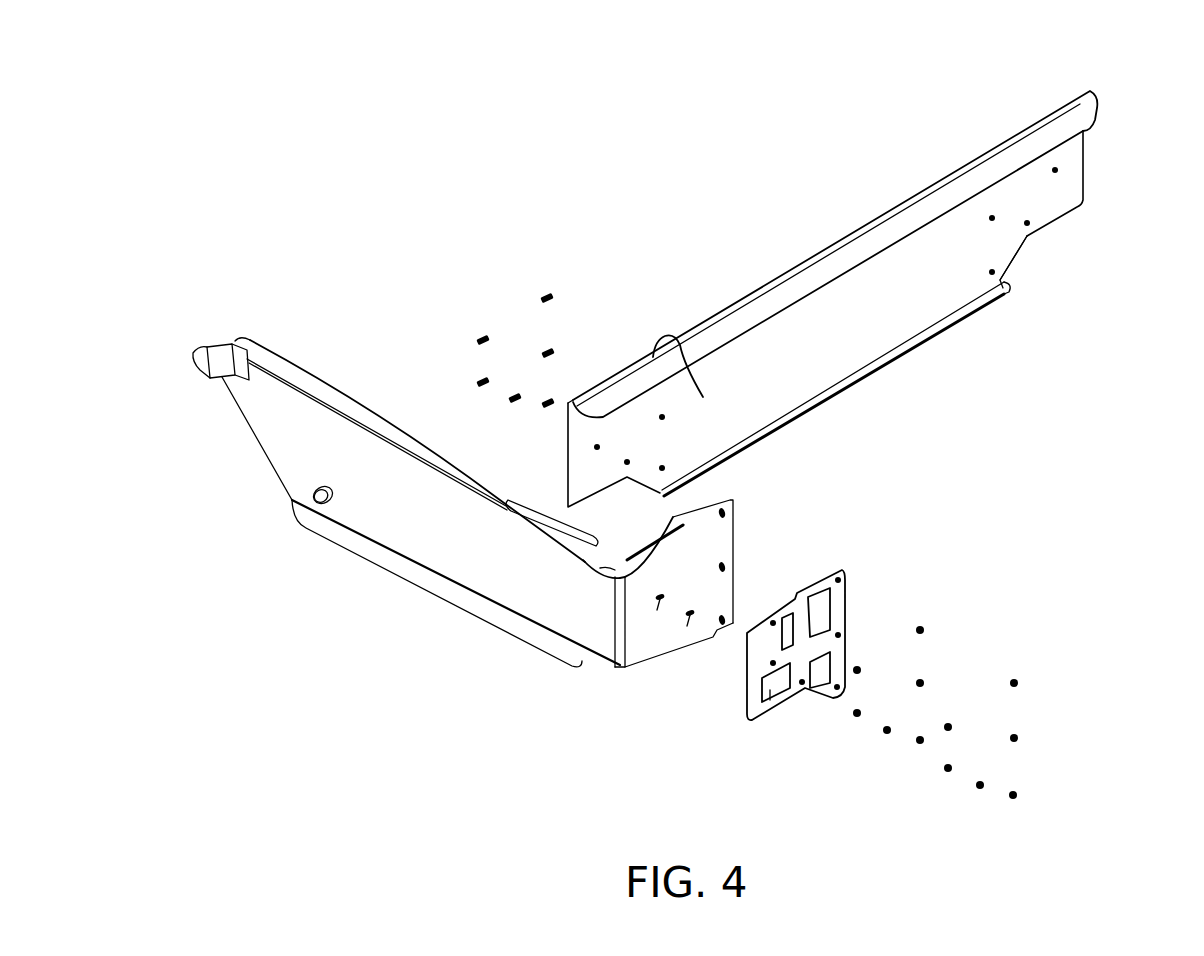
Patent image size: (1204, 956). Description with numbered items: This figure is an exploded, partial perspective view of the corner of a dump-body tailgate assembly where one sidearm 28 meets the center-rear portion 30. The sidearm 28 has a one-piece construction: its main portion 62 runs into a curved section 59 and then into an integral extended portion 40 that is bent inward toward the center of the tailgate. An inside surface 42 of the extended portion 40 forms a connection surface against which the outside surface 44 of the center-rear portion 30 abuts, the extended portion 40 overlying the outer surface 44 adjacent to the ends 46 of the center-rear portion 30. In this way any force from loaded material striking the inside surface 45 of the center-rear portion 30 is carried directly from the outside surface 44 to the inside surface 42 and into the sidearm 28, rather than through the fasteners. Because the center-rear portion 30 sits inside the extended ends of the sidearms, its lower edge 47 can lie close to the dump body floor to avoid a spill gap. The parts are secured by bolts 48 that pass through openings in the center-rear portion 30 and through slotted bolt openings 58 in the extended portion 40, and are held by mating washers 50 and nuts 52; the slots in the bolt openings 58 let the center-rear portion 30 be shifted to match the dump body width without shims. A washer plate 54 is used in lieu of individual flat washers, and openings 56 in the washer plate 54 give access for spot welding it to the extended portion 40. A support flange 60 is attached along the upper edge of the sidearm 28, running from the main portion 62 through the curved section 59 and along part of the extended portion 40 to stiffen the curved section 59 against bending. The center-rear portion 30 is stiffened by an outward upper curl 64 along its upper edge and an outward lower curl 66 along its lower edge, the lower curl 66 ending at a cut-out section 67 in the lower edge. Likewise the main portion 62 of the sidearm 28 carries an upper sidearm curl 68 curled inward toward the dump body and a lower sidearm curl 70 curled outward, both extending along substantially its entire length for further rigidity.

The sidearm 28 is at (357, 512).
The center-rear portion 30 is at (843, 345).
The extended portion 40 is at (724, 538).
The inside surface 42 is at (716, 498).
The outside surface 44 is at (920, 298).
The inside surface 45 is at (684, 384).
The ends 46 is at (1088, 158).
The lower edge 47 is at (1010, 305).
The bolts 48 is at (546, 397).
The washers 50 is at (857, 670).
The nuts 52 is at (948, 727).
The washer plate 54 is at (845, 574).
The openings 56 is at (782, 647).
The bolt openings 58 is at (688, 622).
The curved section 59 is at (617, 632).
The support flange 60 is at (607, 572).
The main portion 62 is at (403, 533).
The upper curl 64 is at (793, 290).
The lower curl 66 is at (833, 396).
The cut-out section 67 is at (1017, 253).
The upper sidearm curl 68 is at (320, 392).
The lower sidearm curl 70 is at (480, 613).